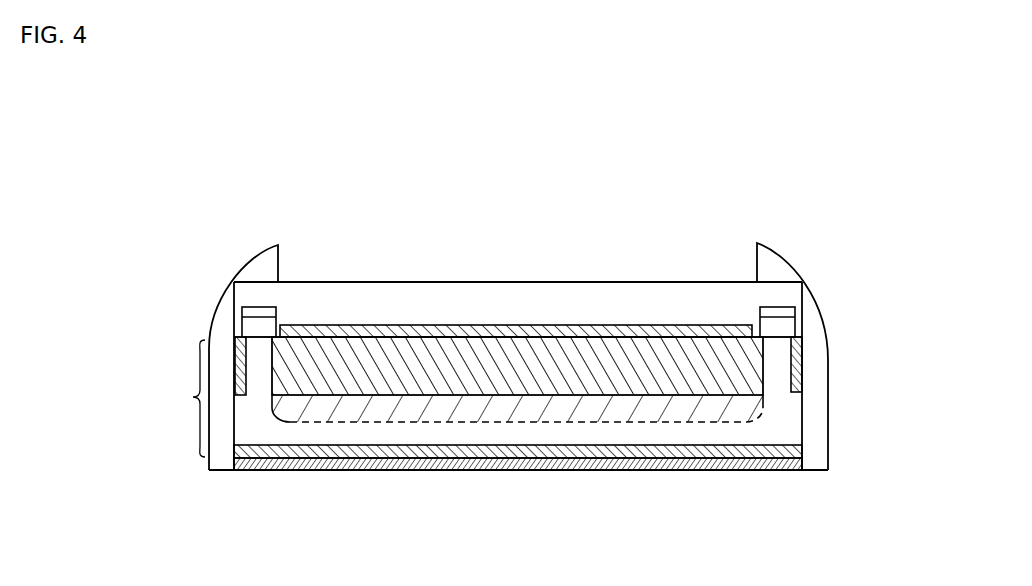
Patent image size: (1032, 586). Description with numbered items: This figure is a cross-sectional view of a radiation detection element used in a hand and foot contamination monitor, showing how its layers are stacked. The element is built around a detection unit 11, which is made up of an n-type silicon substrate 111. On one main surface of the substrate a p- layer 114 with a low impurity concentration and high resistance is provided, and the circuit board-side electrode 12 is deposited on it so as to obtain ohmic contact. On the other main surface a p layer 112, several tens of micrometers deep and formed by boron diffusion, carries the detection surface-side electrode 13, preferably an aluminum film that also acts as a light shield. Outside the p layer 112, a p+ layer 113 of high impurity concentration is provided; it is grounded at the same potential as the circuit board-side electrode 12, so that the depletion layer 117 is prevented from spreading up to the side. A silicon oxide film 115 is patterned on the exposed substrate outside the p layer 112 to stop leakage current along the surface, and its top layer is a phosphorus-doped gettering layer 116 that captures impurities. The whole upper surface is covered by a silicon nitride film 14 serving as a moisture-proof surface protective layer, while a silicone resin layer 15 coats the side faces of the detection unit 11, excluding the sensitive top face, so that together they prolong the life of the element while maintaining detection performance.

The detection unit 11 is at (193, 397).
The n-type silicon substrate 111 is at (702, 436).
The p layer 112 is at (320, 357).
The p+ layer 113 is at (236, 350).
The p- layer 114 is at (308, 472).
The silicon oxide film 115 is at (760, 325).
The gettering layer 116 is at (792, 292).
The depletion layer 117 is at (547, 410).
The circuit board-side electrode 12 is at (438, 468).
The detection surface-side electrode 13 is at (462, 327).
The silicon nitride film 14 is at (572, 297).
The silicone resin layer 15 is at (813, 430).